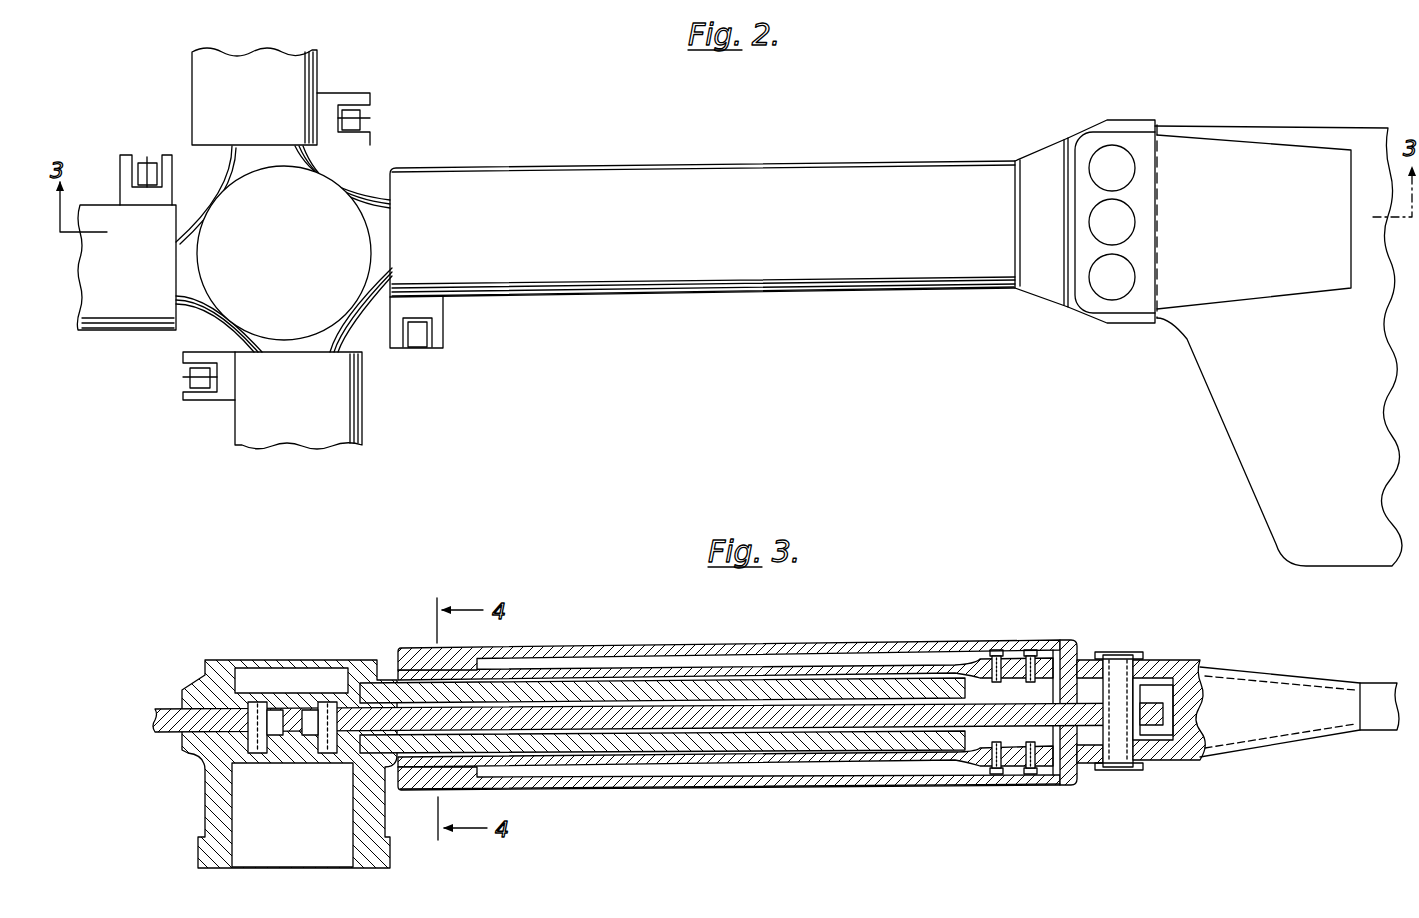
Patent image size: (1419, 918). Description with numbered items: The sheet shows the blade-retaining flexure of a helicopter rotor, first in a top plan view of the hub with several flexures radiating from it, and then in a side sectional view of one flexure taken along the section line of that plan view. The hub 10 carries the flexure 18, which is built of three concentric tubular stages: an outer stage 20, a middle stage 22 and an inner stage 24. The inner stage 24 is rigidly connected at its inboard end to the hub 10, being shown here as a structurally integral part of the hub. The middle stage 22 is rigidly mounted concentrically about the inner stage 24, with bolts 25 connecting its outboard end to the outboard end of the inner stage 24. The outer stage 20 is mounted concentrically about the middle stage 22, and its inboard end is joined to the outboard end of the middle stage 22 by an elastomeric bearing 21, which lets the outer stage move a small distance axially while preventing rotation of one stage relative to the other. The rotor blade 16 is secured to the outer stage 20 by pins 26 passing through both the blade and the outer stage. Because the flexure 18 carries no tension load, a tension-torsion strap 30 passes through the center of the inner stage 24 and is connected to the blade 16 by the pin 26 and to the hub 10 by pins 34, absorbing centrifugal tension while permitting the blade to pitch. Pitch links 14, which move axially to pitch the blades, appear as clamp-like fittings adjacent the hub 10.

In FIG. 2, the hub 10 is at (323, 193).
In FIG. 3, the hub 10 is at (217, 793).
In FIG. 2, the pitch links 14 is at (360, 117).
In FIG. 2, the rotor blade 16 is at (1257, 447).
In FIG. 3, the rotor blade 16 is at (1272, 677).
In FIG. 2, the flexure 18 is at (716, 303).
In FIG. 3, the flexure 18 is at (716, 800).
In FIG. 2, the outer stage 20 is at (208, 83).
In FIG. 3, the outer stage 20 is at (731, 696).
In FIG. 3, the elastomeric bearing 21 is at (425, 657).
In FIG. 3, the middle stage 22 is at (685, 670).
In FIG. 3, the inner stage 24 is at (762, 688).
In FIG. 3, the bolts 25 is at (1025, 652).
In FIG. 2, the pins 26 is at (1125, 214).
In FIG. 3, the pins 26 is at (1118, 667).
In FIG. 3, the tension-torsion strap 30 is at (827, 713).
In FIG. 3, the pins 34 is at (333, 752).